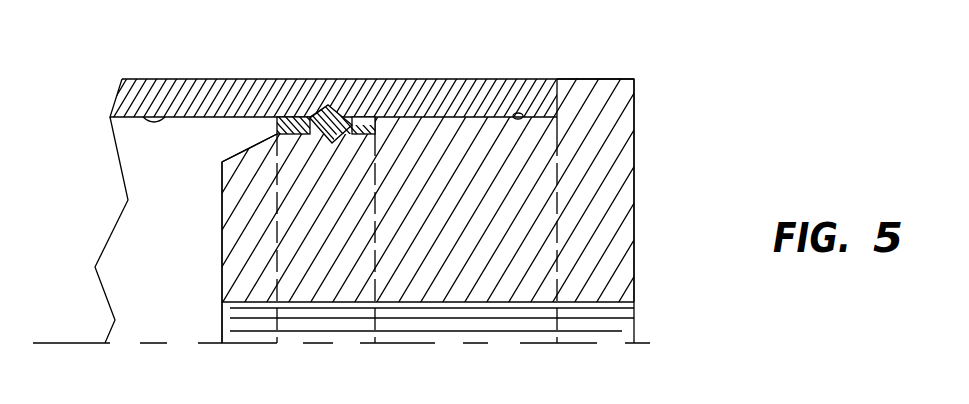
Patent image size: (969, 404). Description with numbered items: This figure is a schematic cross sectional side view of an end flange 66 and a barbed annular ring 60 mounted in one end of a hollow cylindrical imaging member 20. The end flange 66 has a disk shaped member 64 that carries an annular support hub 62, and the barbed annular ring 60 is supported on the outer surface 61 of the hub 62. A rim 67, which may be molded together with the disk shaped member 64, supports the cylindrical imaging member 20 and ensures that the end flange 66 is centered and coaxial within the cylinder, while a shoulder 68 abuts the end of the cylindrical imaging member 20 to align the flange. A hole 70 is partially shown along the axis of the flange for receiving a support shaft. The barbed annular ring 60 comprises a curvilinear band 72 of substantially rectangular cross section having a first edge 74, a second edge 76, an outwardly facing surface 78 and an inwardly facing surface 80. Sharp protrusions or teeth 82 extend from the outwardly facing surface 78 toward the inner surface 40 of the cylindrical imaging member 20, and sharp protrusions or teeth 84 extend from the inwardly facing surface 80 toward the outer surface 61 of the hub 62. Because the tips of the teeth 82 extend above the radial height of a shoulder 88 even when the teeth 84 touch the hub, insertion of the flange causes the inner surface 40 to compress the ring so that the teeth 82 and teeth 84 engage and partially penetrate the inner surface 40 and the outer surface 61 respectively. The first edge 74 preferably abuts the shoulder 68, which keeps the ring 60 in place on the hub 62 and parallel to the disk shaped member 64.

The cylindrical imaging member 20 is at (137, 79).
The inner surface 40 is at (170, 117).
The barbed annular ring 60 is at (248, 119).
The outer surface 61 is at (265, 131).
The annular support hub 62 is at (222, 275).
The disk shaped member 64 is at (595, 79).
The end flange 66 is at (655, 178).
The rim 67 is at (513, 120).
The shoulder 68 is at (558, 107).
The hole 70 is at (612, 326).
The curvilinear band 72 is at (357, 117).
The first edge 74 is at (435, 92).
The second edge 76 is at (273, 117).
The outwardly facing surface 78 is at (300, 117).
The inwardly facing surface 80 is at (222, 166).
The sharp protrusions or teeth 82 is at (316, 112).
The sharp protrusions or teeth 84 is at (277, 134).
The shoulder 88 is at (368, 117).